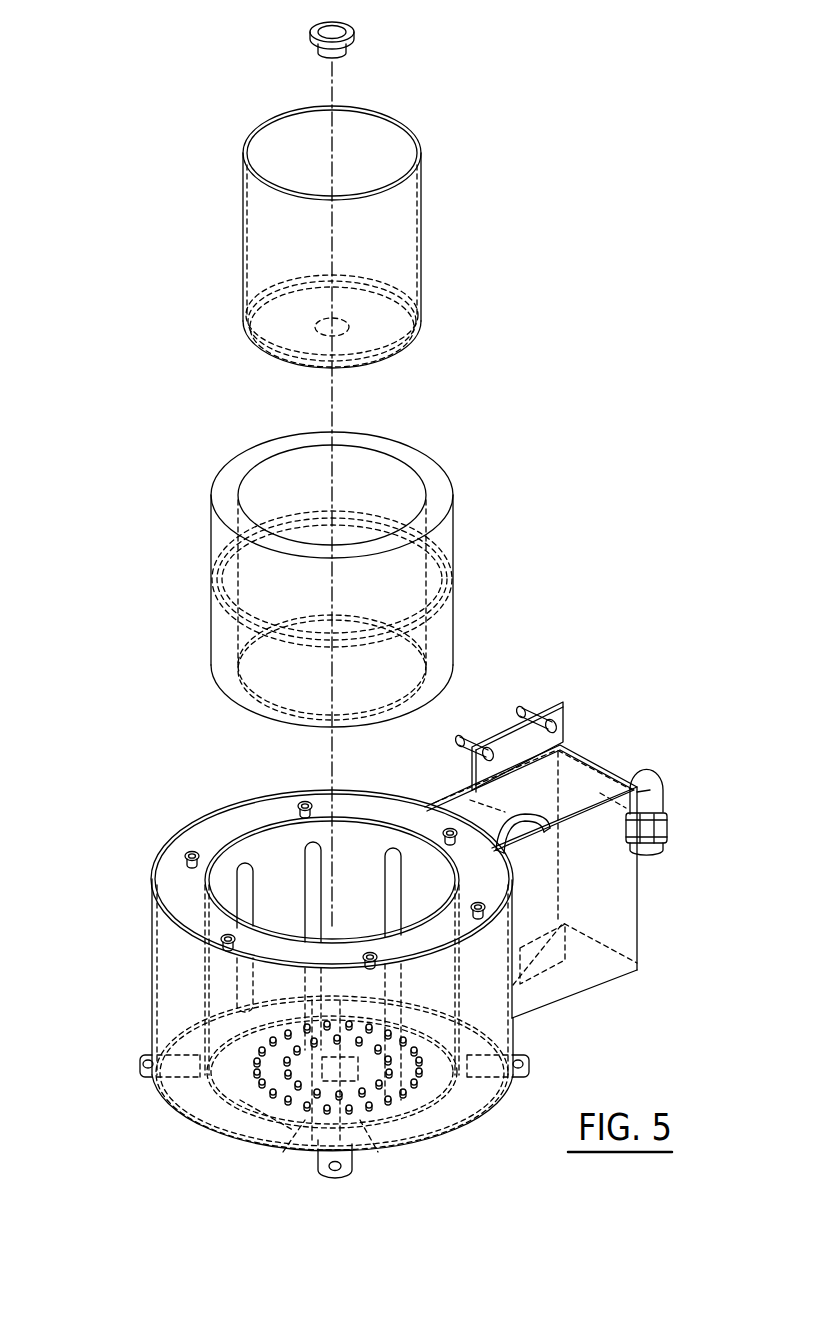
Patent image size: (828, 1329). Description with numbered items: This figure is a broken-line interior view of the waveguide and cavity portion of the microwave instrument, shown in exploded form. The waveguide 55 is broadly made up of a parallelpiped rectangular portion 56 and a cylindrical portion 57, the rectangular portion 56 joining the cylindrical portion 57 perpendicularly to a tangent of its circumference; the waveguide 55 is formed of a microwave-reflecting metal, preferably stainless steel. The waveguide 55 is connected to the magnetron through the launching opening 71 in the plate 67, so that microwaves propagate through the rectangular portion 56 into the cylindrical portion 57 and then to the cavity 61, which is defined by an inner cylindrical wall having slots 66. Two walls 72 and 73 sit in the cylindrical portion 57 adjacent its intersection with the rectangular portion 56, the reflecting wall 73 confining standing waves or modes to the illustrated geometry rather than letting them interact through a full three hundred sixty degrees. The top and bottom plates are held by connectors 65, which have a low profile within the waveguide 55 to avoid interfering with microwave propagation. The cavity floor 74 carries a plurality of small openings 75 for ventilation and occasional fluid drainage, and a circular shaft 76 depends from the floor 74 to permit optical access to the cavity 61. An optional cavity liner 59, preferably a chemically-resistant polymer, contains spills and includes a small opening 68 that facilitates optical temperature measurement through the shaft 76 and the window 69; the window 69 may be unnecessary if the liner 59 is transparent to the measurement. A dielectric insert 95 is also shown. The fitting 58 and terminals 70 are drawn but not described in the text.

The waveguide 55 is at (137, 1112).
The parallelpiped rectangular portion 56 is at (600, 900).
The cylindrical portion 57 is at (135, 975).
The conduit elbow 58 is at (661, 793).
The cavity liner 59 is at (421, 243).
The cavity 61 is at (272, 853).
The connectors 65 is at (186, 852).
The slots 66 is at (322, 872).
The plate 67 is at (505, 727).
The small opening 68 is at (348, 331).
The window 69 is at (350, 25).
The terminals 70 is at (530, 708).
The launching opening 71 is at (507, 822).
The wall 72 is at (470, 795).
The reflecting wall 73 is at (500, 1098).
The cavity floor 74 is at (208, 1130).
The small openings 75 is at (298, 1122).
The circular shaft 76 is at (372, 1140).
The dielectric insert 95 is at (453, 545).